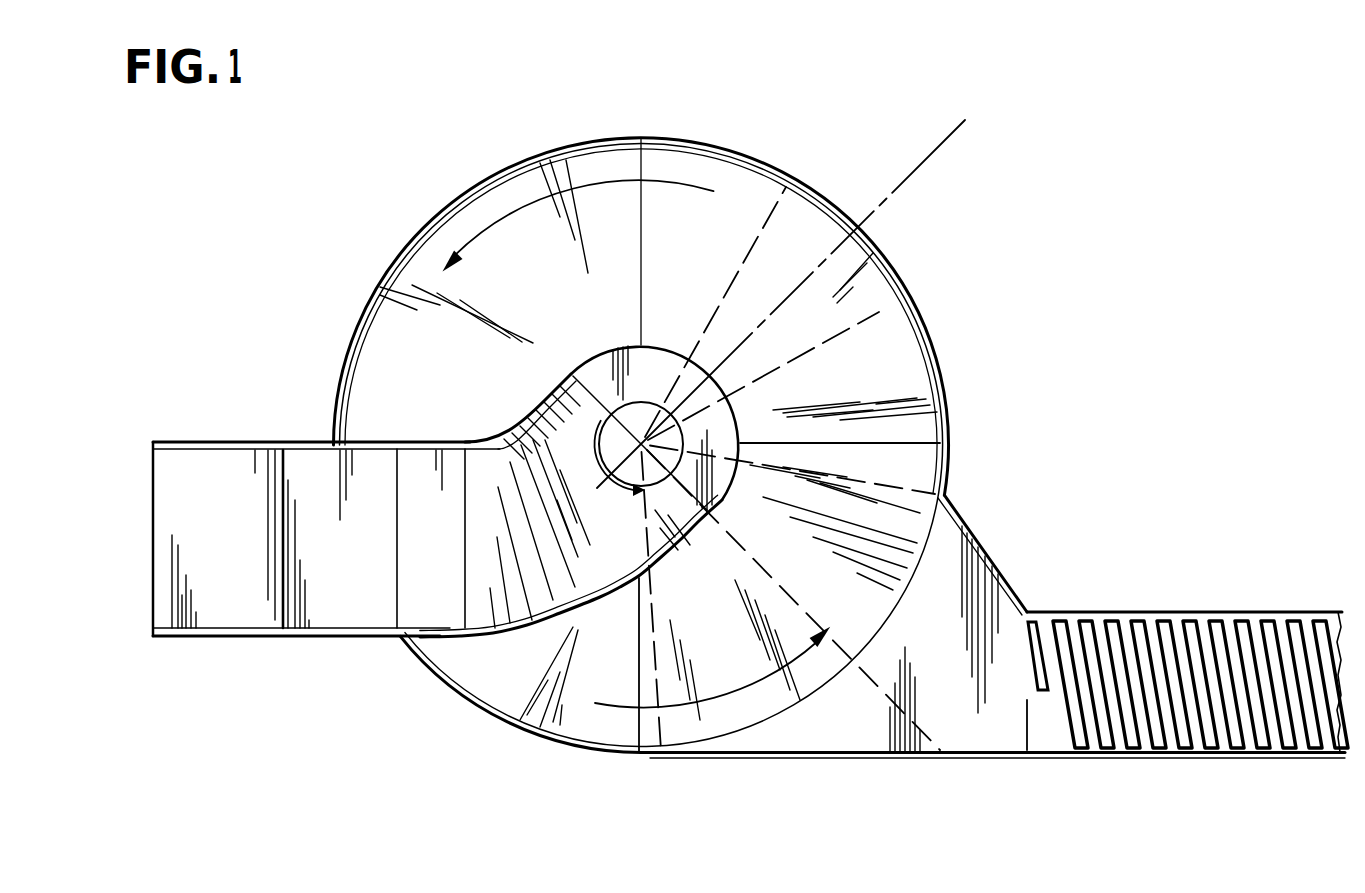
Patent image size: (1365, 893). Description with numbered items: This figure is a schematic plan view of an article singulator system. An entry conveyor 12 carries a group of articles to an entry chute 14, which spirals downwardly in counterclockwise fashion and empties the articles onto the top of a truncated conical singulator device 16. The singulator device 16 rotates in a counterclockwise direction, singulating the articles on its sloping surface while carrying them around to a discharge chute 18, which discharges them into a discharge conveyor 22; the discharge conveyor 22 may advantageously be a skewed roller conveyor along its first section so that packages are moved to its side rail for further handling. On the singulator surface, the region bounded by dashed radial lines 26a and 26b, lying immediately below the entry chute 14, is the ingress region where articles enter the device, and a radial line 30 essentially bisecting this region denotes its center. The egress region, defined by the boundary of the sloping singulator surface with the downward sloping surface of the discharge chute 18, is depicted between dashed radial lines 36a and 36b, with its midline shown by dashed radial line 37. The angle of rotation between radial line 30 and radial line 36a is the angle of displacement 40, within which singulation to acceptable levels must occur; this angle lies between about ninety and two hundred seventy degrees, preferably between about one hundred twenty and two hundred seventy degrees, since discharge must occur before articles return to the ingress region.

The entry conveyor 12 is at (209, 441).
The entry chute 14 is at (543, 397).
The singulator device 16 is at (752, 157).
The discharge chute 18 is at (1000, 572).
The discharge conveyor 22 is at (1112, 611).
The dashed radial line 26a is at (779, 235).
The dashed radial line 26b is at (883, 305).
The radial line 30 is at (961, 128).
The dashed radial line 36a is at (645, 675).
The dashed radial line 36b is at (867, 480).
The dashed radial line 37 is at (880, 688).
The angle of displacement 40 is at (614, 362).